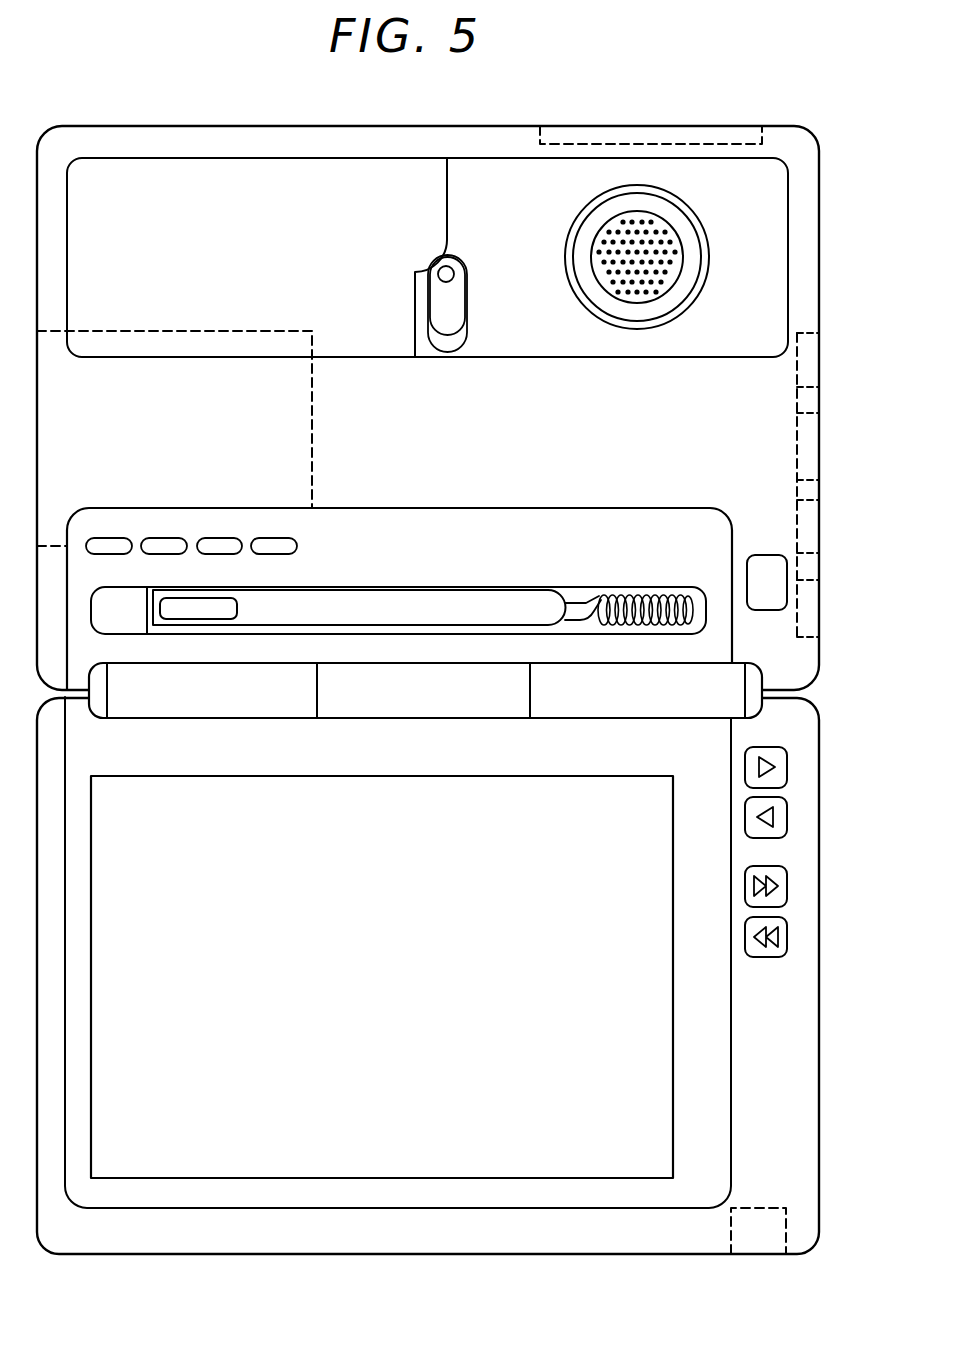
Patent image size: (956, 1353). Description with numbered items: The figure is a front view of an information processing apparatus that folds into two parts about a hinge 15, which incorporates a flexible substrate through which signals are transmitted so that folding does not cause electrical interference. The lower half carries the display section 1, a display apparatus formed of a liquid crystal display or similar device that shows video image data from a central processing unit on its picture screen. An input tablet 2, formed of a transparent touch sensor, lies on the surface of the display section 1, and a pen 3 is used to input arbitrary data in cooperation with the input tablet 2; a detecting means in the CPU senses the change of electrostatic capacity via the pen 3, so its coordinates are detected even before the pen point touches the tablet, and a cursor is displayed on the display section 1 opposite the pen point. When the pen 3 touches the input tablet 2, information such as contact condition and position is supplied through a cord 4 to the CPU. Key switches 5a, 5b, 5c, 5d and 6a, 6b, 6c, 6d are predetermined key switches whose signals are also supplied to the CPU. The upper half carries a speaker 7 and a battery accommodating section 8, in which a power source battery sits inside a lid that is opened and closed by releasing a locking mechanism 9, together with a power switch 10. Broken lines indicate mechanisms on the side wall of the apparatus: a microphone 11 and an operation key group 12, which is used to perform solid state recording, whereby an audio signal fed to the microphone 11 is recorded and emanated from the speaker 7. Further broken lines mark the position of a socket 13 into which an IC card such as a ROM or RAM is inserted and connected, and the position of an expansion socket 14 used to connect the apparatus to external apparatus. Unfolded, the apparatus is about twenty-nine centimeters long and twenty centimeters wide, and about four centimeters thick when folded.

The display section 1 is at (356, 791).
The input tablet 2 is at (382, 955).
The pen 3 is at (432, 597).
The cord 4 is at (630, 595).
The key switch 5a is at (745, 769).
The key switch 5b is at (745, 819).
The key switch 5c is at (745, 888).
The key switch 5d is at (745, 939).
The key switch 6a is at (112, 537).
The key switch 6b is at (165, 537).
The key switch 6c is at (218, 537).
The key switch 6d is at (273, 537).
The speaker 7 is at (668, 234).
The battery accommodating section 8 is at (370, 345).
The locking mechanism 9 is at (452, 302).
The power switch 10 is at (767, 605).
The microphone 11 is at (755, 1217).
The operation key group 12 is at (797, 408).
The socket 13 is at (303, 440).
The expansion socket 14 is at (541, 146).
The hinge 15 is at (137, 712).